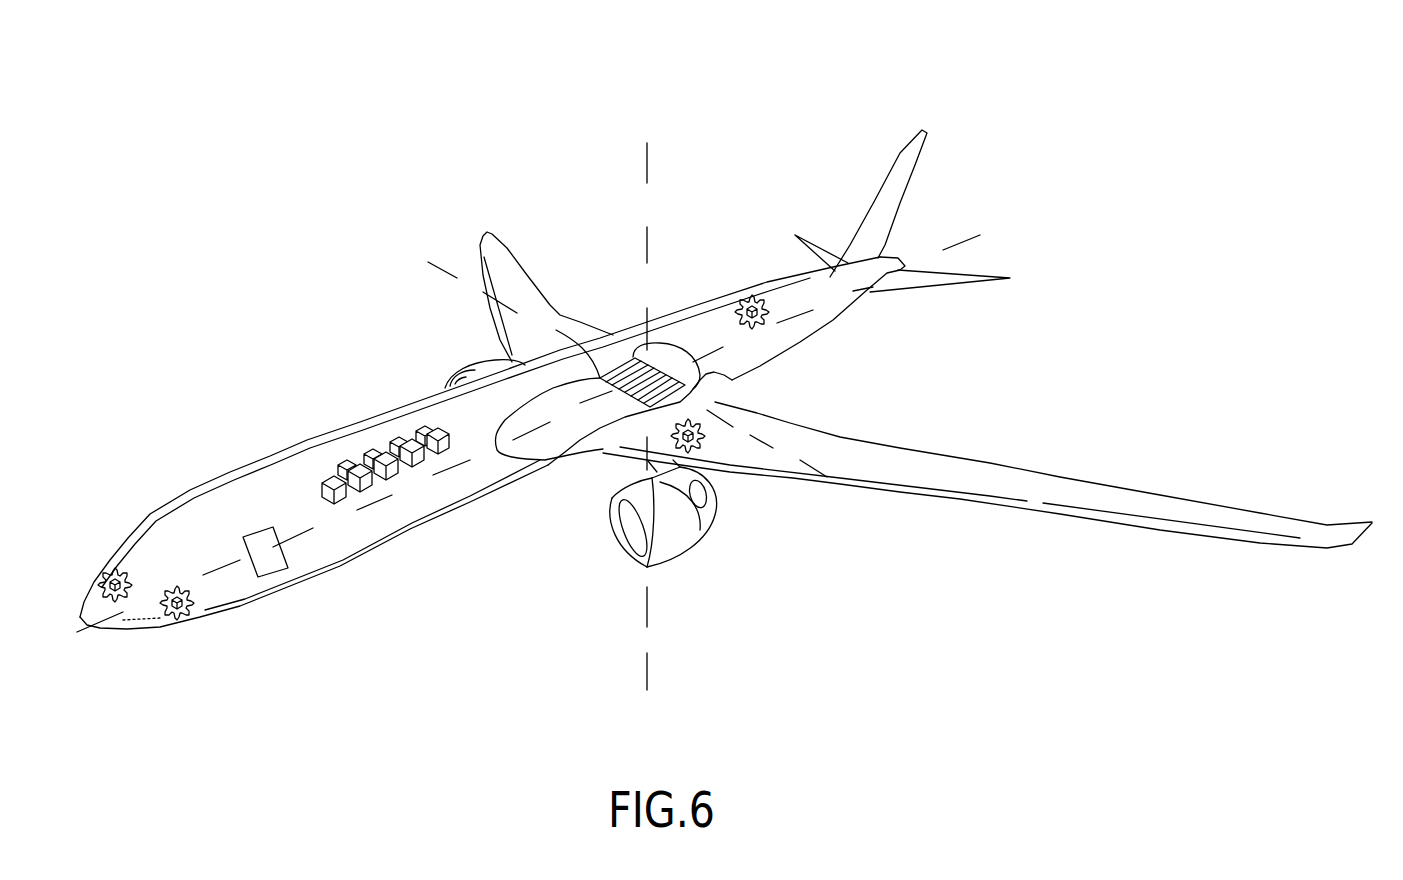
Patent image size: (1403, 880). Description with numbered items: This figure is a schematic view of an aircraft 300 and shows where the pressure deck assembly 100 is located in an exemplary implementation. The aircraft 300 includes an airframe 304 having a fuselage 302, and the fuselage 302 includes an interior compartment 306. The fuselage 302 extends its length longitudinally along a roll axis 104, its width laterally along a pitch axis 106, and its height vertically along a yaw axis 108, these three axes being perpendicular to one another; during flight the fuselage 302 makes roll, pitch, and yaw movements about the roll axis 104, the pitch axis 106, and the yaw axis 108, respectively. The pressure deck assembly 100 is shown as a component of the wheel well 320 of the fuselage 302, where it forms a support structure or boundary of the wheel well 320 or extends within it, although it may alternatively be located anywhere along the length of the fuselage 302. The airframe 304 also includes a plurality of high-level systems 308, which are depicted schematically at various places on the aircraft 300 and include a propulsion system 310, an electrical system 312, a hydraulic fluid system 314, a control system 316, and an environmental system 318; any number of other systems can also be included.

The aircraft 300 is at (1020, 98).
The fuselage 302 is at (393, 546).
The airframe 304 is at (698, 262).
The pitch axis 106 is at (865, 497).
The roll axis 104 is at (1020, 218).
The yaw axis 108 is at (649, 608).
The high-level systems 308 is at (583, 247).
The wheel well 320 is at (617, 400).
The pressure deck assembly 100 is at (636, 353).
The propulsion system 310 is at (474, 362).
The interior compartment 306 is at (390, 432).
The electrical system 312 is at (183, 613).
The hydraulic fluid system 314 is at (707, 440).
The control system 316 is at (115, 572).
The environmental system 318 is at (751, 298).